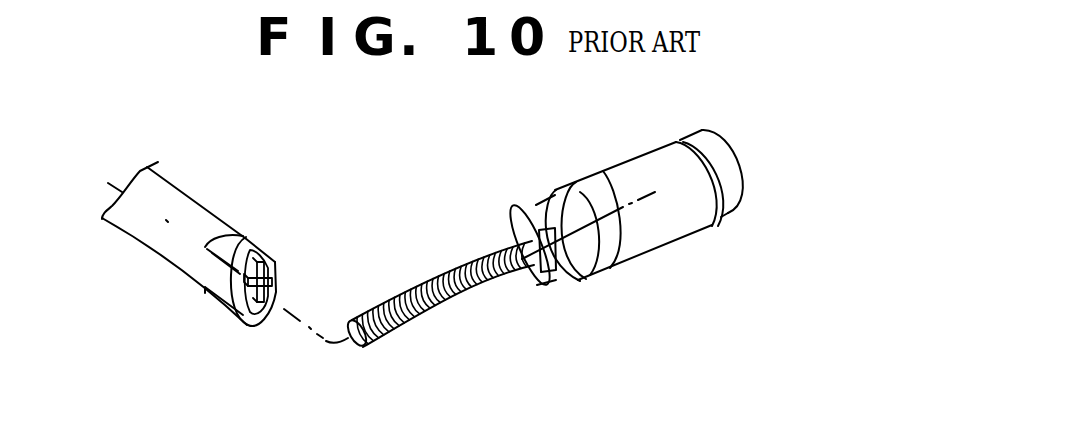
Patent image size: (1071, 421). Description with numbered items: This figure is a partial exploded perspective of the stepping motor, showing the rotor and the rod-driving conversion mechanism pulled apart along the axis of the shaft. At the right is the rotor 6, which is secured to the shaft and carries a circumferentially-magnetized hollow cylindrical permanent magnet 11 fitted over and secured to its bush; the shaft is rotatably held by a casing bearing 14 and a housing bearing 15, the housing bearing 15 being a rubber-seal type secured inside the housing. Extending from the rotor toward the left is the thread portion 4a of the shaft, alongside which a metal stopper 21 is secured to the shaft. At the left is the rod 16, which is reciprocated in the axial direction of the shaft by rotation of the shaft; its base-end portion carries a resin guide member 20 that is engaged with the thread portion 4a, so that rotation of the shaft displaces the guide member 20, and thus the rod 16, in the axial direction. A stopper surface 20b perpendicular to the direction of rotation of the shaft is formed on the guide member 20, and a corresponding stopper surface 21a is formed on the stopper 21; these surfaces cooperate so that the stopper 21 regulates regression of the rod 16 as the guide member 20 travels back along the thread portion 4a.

The rod 16 is at (174, 186).
The guide member 20 is at (235, 233).
The stopper surface 20b is at (276, 298).
The thread portion 4a is at (491, 277).
The stopper 21 is at (537, 286).
The stopper surface 21a is at (505, 244).
The housing bearing 15 is at (580, 284).
The rotor 6 is at (610, 168).
The permanent magnet 11 is at (641, 254).
The casing bearing 14 is at (728, 213).